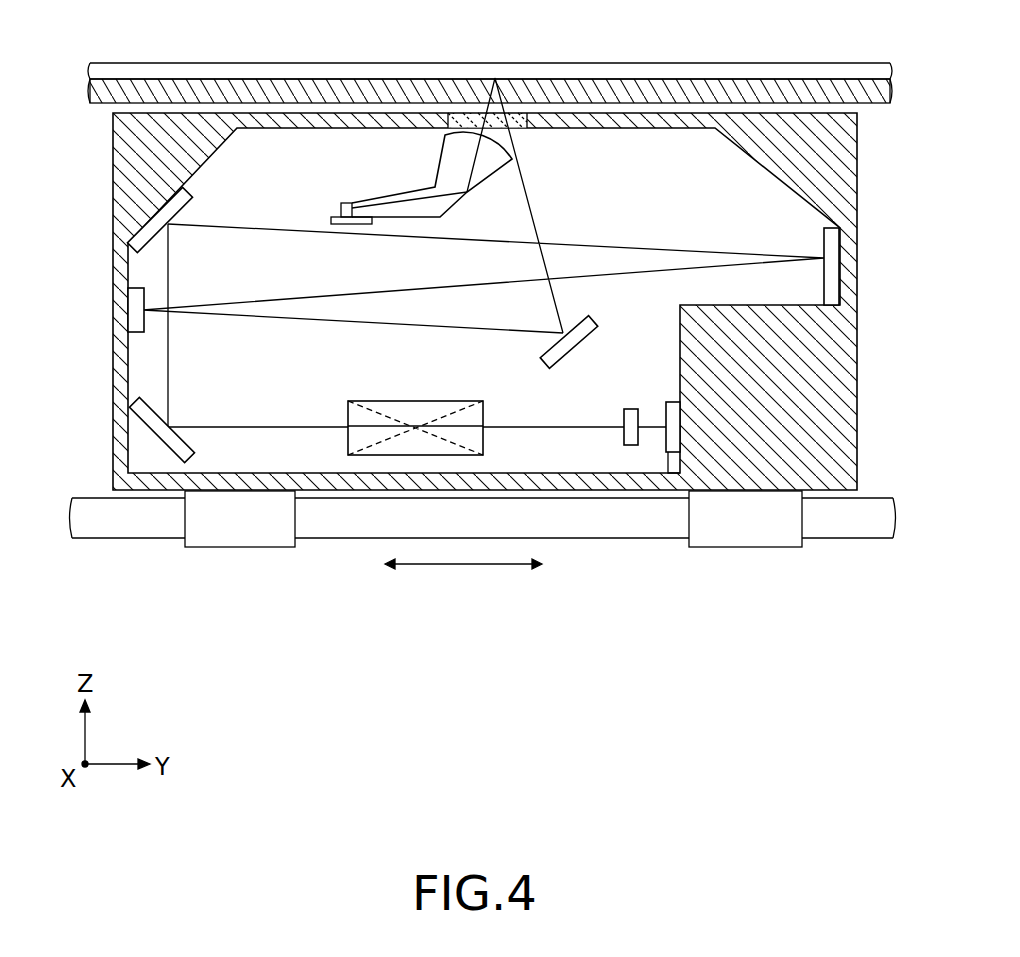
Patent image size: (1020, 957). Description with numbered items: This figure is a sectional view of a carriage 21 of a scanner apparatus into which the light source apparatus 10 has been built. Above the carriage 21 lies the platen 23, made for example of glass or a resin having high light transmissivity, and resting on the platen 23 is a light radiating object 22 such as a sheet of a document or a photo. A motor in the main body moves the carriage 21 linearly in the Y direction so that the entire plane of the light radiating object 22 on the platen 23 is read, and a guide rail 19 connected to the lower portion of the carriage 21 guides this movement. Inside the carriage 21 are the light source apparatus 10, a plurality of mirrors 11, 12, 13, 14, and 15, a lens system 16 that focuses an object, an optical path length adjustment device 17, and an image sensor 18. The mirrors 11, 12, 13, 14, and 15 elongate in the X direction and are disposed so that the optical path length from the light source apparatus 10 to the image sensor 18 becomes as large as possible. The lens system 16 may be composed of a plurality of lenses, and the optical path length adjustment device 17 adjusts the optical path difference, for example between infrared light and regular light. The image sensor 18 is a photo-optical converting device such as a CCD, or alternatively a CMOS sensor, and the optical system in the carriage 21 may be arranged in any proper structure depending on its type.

The light source apparatus 10 is at (445, 165).
The mirror 11 is at (578, 340).
The mirror 12 is at (133, 315).
The mirror 13 is at (828, 270).
The mirror 14 is at (152, 223).
The mirror 15 is at (160, 433).
The lens system 16 is at (395, 408).
The optical path length adjustment device 17 is at (627, 443).
The image sensor 18 is at (670, 448).
The guide rail 19 is at (133, 527).
The carriage 21 is at (136, 153).
The light radiating object 22 is at (615, 71).
The platen 23 is at (742, 90).